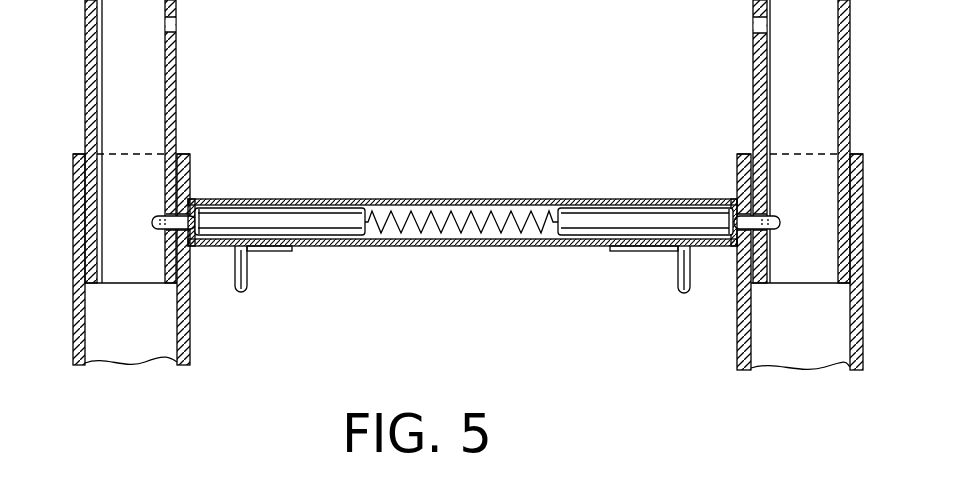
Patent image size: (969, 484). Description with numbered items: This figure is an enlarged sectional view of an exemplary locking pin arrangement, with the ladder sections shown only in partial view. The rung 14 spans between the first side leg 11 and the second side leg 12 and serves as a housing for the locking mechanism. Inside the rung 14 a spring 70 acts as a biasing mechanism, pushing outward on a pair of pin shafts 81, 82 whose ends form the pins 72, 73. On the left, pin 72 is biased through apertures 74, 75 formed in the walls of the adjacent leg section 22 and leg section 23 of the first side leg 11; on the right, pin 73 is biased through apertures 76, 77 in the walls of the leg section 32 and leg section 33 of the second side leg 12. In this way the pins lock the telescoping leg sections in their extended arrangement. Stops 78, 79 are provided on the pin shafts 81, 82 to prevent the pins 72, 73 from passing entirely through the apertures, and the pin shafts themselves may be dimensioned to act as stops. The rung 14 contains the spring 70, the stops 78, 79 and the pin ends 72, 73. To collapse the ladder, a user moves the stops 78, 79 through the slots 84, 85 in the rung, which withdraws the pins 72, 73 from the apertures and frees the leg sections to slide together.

The first side leg 11 is at (73, 290).
The second side leg 12 is at (863, 287).
The rung 14 is at (525, 199).
The leg section 22 is at (190, 312).
The leg section 23 is at (177, 78).
The leg section 32 is at (737, 315).
The leg section 33 is at (752, 103).
The spring 70 is at (440, 213).
The pin 72 is at (152, 222).
The pin 73 is at (780, 222).
The aperture 74 is at (172, 210).
The aperture 75 is at (190, 205).
The aperture 76 is at (767, 208).
The aperture 77 is at (742, 208).
The stop 78 is at (248, 284).
The stop 79 is at (678, 288).
The pin shaft 81 is at (280, 226).
The pin shaft 82 is at (645, 214).
The slot 84 is at (291, 248).
The slot 85 is at (644, 251).